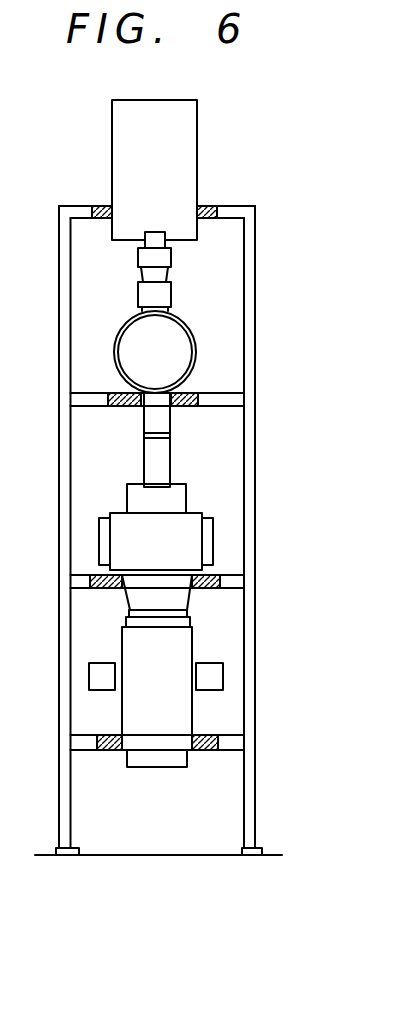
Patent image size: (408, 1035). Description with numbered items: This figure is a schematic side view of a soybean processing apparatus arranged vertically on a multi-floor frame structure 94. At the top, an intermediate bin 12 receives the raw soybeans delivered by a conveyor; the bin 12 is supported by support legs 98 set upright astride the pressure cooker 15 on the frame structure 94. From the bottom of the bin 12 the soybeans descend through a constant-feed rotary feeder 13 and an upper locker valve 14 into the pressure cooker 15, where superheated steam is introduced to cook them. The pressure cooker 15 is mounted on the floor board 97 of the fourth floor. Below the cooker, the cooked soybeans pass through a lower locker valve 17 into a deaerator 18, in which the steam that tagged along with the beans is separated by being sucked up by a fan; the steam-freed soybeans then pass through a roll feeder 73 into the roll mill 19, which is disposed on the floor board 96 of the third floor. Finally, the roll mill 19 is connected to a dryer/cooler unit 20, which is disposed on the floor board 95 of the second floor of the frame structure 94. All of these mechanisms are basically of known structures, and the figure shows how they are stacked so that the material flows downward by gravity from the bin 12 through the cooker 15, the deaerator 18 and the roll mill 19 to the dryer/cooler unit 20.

The intermediate bin 12 is at (197, 142).
The constant-feed rotary feeder 13 is at (138, 257).
The upper locker valve 14 is at (168, 293).
The pressure cooker 15 is at (120, 333).
The lower locker valve 17 is at (180, 417).
The deaerator 18 is at (143, 463).
The roll feeder 73 is at (127, 497).
The roll mill 19 is at (190, 545).
The dryer/cooler unit 20 is at (122, 718).
The frame structure 94 is at (255, 508).
The floor board of the second floor 95 is at (228, 742).
The floor board of the third floor 96 is at (85, 589).
The floor board of the fourth floor 97 is at (220, 406).
The support legs 98 is at (83, 206).